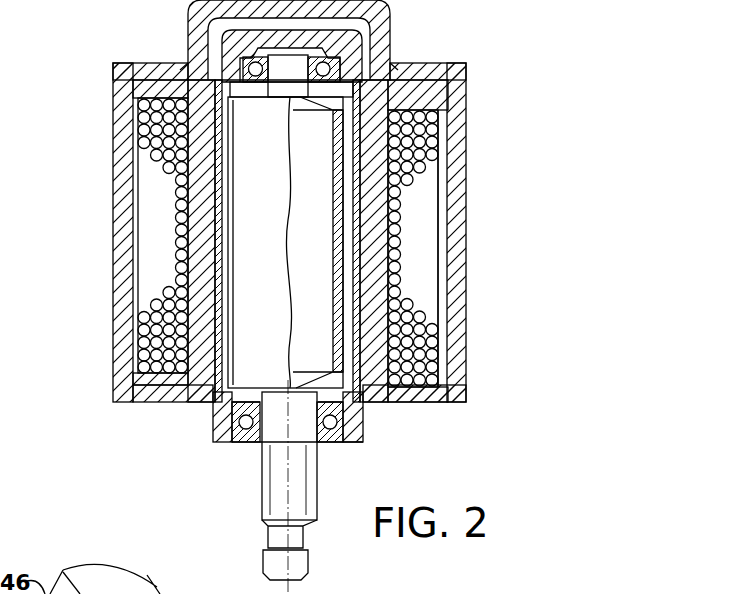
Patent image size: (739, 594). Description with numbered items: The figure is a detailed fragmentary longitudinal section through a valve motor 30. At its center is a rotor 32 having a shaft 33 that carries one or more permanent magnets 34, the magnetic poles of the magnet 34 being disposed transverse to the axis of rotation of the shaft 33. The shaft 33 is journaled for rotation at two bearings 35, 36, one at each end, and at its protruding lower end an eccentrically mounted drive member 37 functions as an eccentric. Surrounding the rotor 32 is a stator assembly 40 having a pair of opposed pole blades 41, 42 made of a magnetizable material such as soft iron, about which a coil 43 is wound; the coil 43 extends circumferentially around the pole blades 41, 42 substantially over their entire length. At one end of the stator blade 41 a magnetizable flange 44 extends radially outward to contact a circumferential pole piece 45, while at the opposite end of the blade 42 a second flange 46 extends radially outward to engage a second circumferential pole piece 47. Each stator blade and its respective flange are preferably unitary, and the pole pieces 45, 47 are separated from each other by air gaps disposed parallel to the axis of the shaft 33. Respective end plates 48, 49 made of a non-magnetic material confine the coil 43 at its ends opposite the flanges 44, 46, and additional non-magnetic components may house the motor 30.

The valve motor 30 is at (573, 210).
The rotor 32 is at (258, 257).
The shaft 33 is at (237, 395).
The permanent magnet 34 is at (307, 313).
The bearing 35 is at (363, 415).
The bearing 36 is at (323, 66).
The drive member 37 is at (308, 568).
The stator assembly 40 is at (418, 283).
The pole blade 41 is at (196, 202).
The pole blade 42 is at (388, 195).
The coil 43 is at (155, 118).
The flange 44 is at (163, 395).
The pole piece 45 is at (128, 262).
The flange 46 is at (403, 90).
The pole piece 47 is at (465, 218).
The end plate 48 is at (417, 393).
The end plate 49 is at (172, 88).